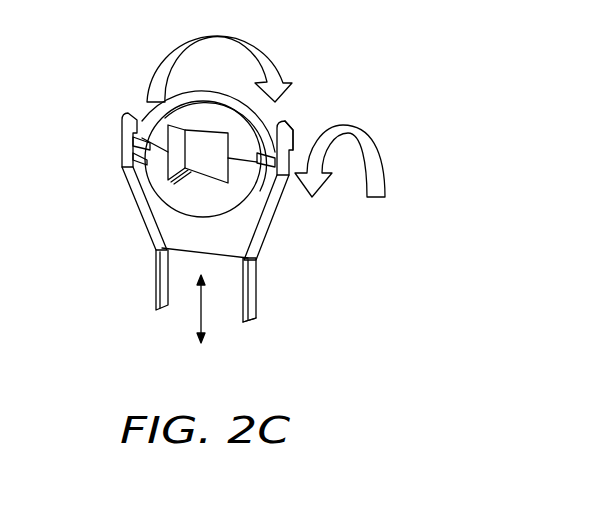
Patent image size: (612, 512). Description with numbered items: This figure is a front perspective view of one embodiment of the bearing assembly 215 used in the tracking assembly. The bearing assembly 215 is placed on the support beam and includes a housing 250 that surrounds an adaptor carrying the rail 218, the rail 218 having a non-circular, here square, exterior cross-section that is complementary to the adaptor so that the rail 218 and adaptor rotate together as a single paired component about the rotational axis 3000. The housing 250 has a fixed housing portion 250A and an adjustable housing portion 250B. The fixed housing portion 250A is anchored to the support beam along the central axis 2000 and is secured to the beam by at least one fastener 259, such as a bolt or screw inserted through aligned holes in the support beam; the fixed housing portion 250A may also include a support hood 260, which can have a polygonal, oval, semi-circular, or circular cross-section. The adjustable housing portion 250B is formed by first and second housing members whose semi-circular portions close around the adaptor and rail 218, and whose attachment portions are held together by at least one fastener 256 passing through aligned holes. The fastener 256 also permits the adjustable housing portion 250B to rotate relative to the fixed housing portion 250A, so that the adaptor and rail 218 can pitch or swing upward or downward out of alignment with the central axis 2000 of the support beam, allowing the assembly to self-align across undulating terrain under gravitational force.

The bearing assembly 215 is at (388, 142).
The rail 218 is at (160, 118).
The housing 250 is at (288, 138).
The fixed housing portion 250A is at (257, 283).
The adjustable housing portion 250B is at (248, 117).
The fastener 256 is at (290, 145).
The fastener 259 is at (250, 320).
The support hood 260 is at (265, 225).
The central axis 2000 is at (197, 323).
The rotational axis 3000 is at (200, 153).